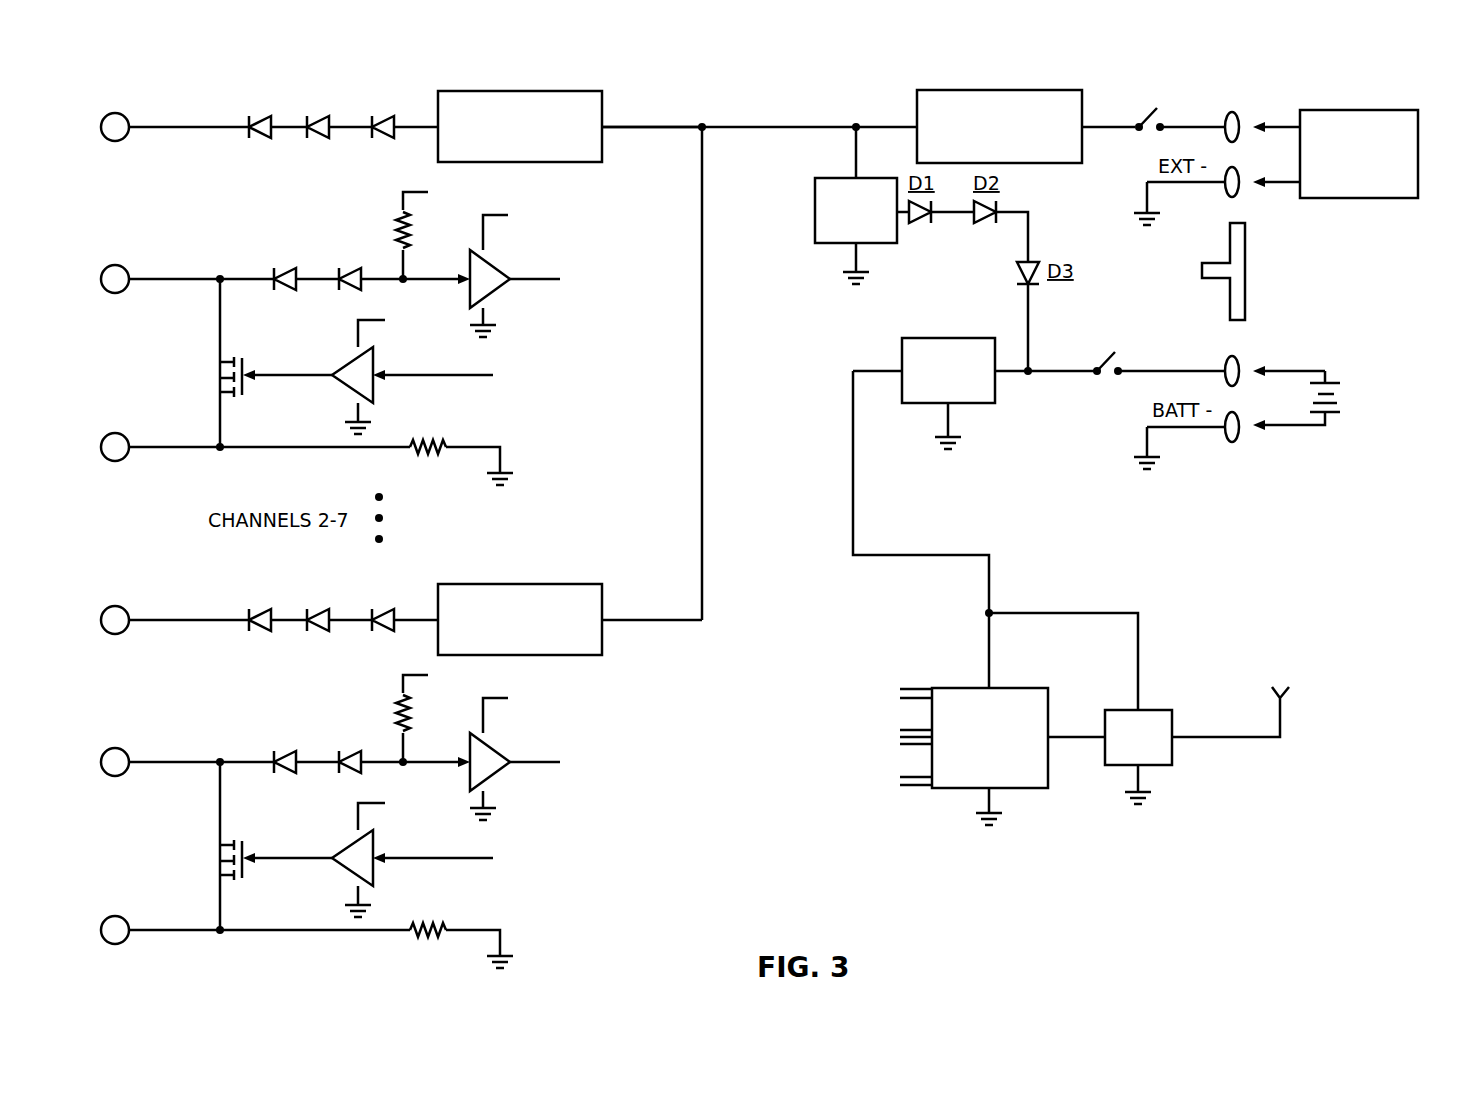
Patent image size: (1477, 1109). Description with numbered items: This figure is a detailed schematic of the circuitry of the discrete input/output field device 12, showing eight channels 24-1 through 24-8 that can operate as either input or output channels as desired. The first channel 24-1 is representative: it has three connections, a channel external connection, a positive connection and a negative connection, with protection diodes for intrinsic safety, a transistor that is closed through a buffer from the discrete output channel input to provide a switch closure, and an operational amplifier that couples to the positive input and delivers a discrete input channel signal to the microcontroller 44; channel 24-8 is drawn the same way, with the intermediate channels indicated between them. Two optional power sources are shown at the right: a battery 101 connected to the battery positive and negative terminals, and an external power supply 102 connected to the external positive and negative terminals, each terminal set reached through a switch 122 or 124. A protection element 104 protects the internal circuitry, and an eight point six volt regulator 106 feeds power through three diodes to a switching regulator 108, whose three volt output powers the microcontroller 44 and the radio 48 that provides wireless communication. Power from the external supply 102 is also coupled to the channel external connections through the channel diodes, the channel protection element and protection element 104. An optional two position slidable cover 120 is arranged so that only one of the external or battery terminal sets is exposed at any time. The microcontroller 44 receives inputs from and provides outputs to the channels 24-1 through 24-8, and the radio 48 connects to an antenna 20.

The field device 12 is at (803, 108).
The channel 24-1 is at (724, 370).
The channel 24-8 is at (664, 729).
The protection element 104 is at (917, 113).
The 8.6 voltage regulator 106 is at (838, 178).
The switching regulator 108 is at (948, 338).
The external supply switch 122 is at (1155, 108).
The battery switch 124 is at (1112, 356).
The two position slidable cover 120 is at (1228, 307).
The external power supply 102 is at (1360, 110).
The battery 101 is at (1408, 378).
The microcontroller 44 is at (1005, 688).
The radio 48 is at (1155, 710).
The antenna 20 is at (1290, 695).